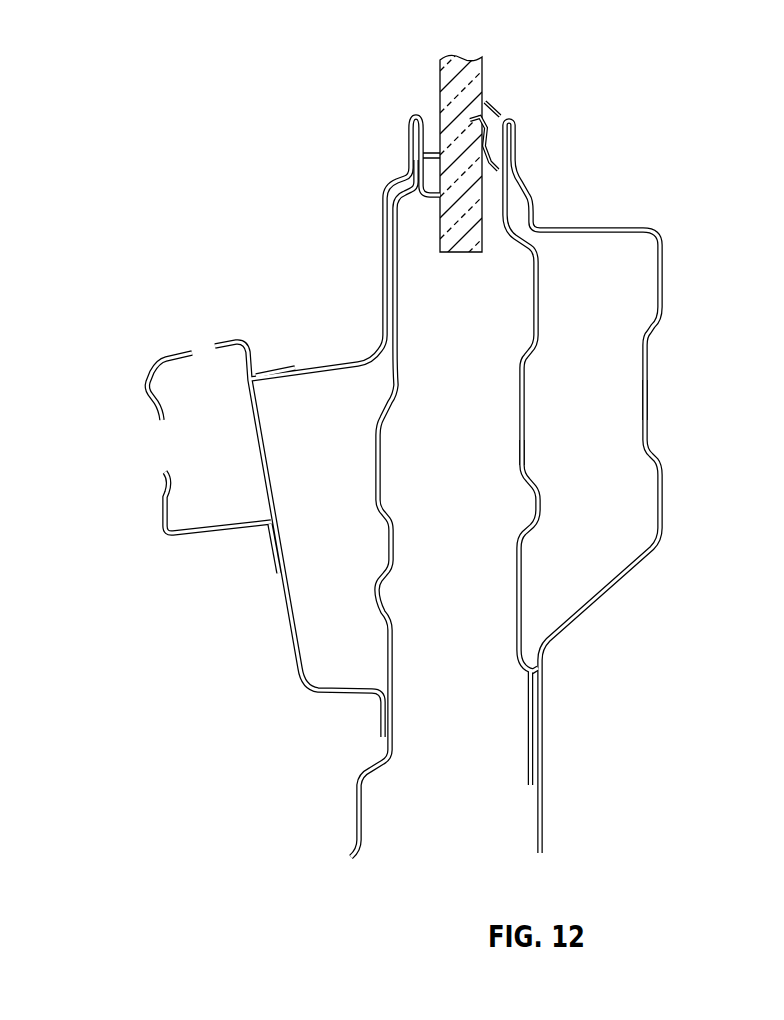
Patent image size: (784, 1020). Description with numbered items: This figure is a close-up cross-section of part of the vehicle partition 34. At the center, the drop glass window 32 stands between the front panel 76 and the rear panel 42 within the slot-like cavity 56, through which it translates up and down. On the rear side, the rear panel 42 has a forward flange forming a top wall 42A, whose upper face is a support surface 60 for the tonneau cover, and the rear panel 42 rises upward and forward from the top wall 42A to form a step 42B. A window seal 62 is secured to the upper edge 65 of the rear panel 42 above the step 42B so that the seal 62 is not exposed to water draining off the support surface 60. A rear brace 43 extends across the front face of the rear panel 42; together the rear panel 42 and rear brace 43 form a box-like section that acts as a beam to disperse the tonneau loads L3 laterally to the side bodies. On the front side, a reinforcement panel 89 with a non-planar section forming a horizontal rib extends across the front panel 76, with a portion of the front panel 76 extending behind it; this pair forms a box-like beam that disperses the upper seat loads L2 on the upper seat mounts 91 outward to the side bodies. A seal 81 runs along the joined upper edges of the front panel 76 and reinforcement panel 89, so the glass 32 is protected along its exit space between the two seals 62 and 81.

The drop glass window 32 is at (468, 82).
The vehicle partition 34 is at (311, 196).
The seal 81 is at (410, 118).
The window seal 62 is at (503, 103).
The upper edge 65 is at (510, 112).
The step 42B is at (517, 167).
The support surface 60 is at (616, 213).
The top wall 42A is at (648, 227).
The rear panel 42 is at (663, 507).
The rear brace 43 is at (530, 477).
The slot-like cavity 56 is at (492, 462).
The front panel 76 is at (383, 443).
The reinforcement panel 89 is at (288, 632).
The upper seat mounts 91 is at (162, 497).
The upper seat loads L2 is at (100, 400).
The tonneau loads L3 is at (656, 343).